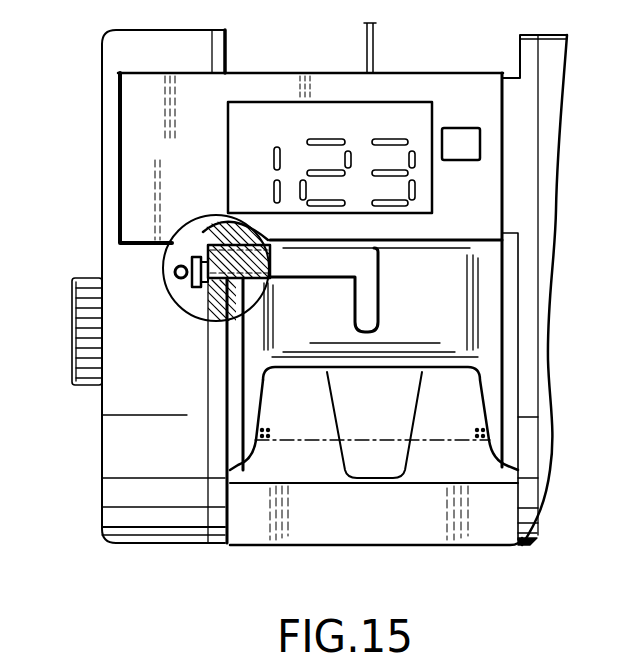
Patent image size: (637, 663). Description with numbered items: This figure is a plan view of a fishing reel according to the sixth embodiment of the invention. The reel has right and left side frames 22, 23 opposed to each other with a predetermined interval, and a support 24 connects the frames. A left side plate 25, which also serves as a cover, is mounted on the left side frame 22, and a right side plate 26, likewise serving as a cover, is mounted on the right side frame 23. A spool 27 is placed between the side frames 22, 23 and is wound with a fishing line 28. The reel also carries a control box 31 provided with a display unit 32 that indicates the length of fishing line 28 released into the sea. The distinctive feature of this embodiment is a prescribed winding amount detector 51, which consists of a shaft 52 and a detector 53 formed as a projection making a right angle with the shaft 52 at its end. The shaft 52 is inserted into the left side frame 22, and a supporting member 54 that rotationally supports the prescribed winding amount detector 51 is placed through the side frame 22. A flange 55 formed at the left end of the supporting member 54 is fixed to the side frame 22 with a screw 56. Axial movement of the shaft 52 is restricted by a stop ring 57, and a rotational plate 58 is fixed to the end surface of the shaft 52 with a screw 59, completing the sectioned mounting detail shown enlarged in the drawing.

The left side frame 22 is at (213, 490).
The right side frame 23 is at (528, 460).
The support 24 is at (422, 527).
The left side plate 25 is at (110, 463).
The right side plate 26 is at (542, 385).
The spool 27 is at (490, 322).
The fishing line 28 is at (275, 432).
The control box 31 is at (452, 87).
The display unit 32 is at (270, 110).
The prescribed winding amount detector 51 is at (387, 275).
The shaft 52 is at (292, 268).
The detector 53 is at (372, 305).
The supporting member 54 is at (218, 213).
The flange 55 is at (205, 320).
The screw 56 is at (185, 318).
The stop ring 57 is at (205, 232).
The rotational plate 58 is at (190, 245).
The screw 59 is at (176, 258).